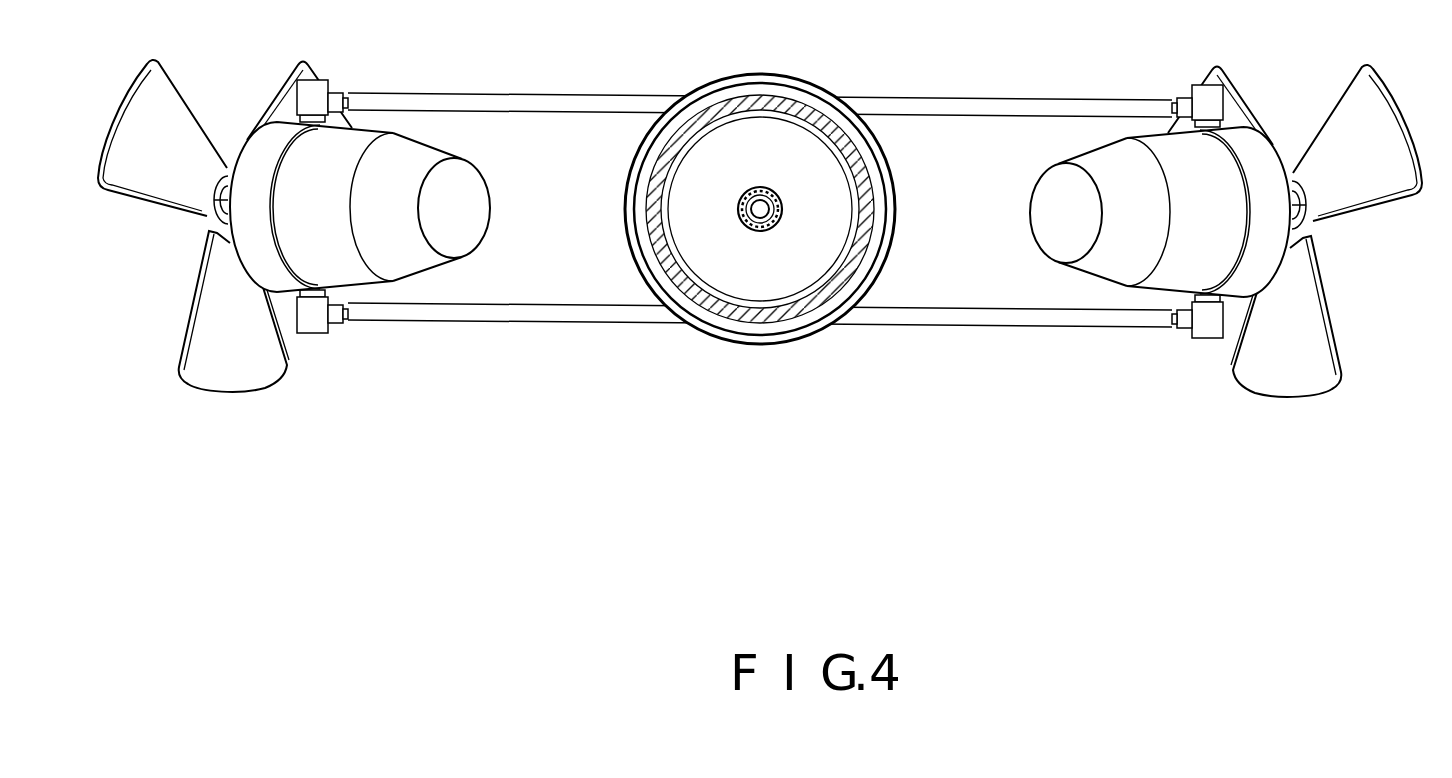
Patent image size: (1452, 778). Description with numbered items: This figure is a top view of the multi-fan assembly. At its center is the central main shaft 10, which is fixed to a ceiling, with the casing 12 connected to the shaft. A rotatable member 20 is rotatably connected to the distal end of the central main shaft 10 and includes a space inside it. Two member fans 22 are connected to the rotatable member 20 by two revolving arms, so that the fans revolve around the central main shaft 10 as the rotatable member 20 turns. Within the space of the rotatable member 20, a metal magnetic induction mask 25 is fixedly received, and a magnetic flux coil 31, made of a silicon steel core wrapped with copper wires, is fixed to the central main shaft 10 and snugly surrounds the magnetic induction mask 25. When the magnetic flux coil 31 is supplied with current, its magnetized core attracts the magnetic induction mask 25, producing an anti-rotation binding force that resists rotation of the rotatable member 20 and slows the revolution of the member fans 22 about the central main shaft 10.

The central main shaft 10 is at (742, 227).
The casing 12 is at (880, 273).
The rotatable member 20 is at (762, 325).
The member fans 22 is at (1108, 162).
The metal magnetic induction mask 25 is at (732, 310).
The magnetic flux coil 31 is at (807, 265).